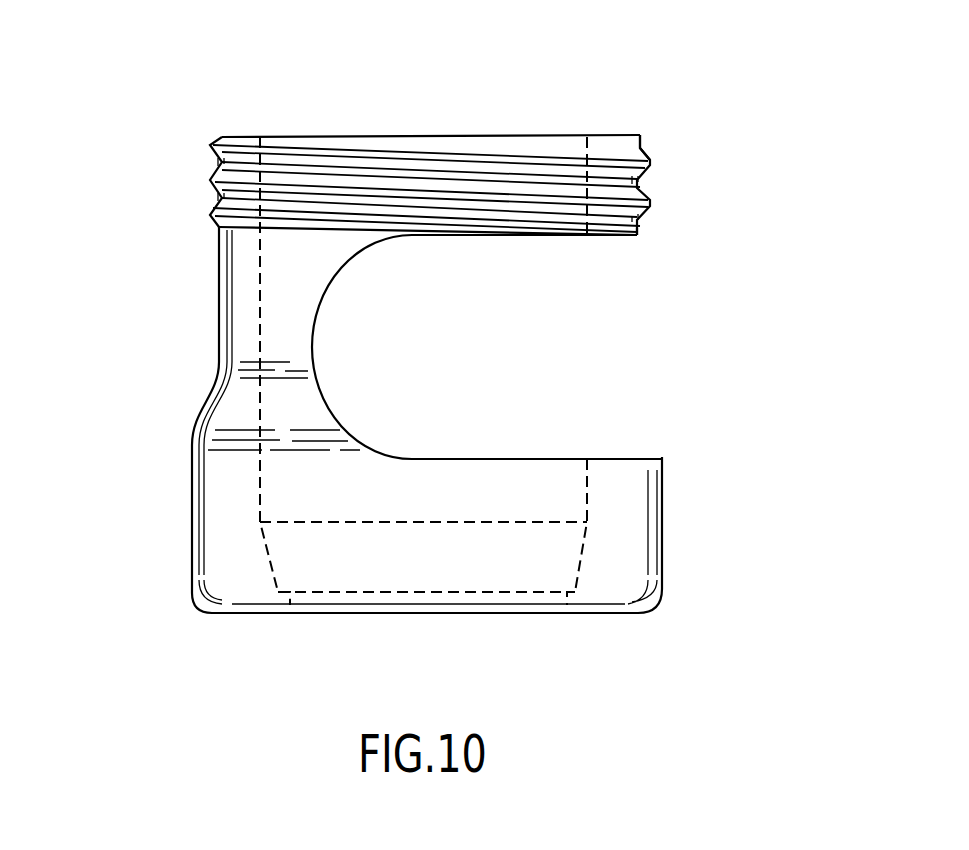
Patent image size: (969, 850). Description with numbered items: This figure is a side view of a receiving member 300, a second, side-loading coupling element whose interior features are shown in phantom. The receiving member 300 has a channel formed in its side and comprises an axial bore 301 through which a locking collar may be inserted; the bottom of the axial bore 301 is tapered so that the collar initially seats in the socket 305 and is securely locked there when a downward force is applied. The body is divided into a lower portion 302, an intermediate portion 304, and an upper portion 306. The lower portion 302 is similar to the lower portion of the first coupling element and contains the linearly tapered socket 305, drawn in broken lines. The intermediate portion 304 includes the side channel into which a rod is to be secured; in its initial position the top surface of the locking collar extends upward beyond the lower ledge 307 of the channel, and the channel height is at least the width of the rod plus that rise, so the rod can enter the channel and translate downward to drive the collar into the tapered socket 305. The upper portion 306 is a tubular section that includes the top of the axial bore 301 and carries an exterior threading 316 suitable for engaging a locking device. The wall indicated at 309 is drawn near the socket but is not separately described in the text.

The receiving member 300 is at (140, 288).
The axial bore 301 is at (407, 130).
The lower portion 302 is at (688, 532).
The intermediate portion 304 is at (710, 339).
The socket 305 is at (475, 569).
The upper portion 306 is at (700, 195).
The lower ledge 307 is at (497, 458).
The cavity wall 309 is at (583, 561).
The exterior threading 316 is at (645, 141).